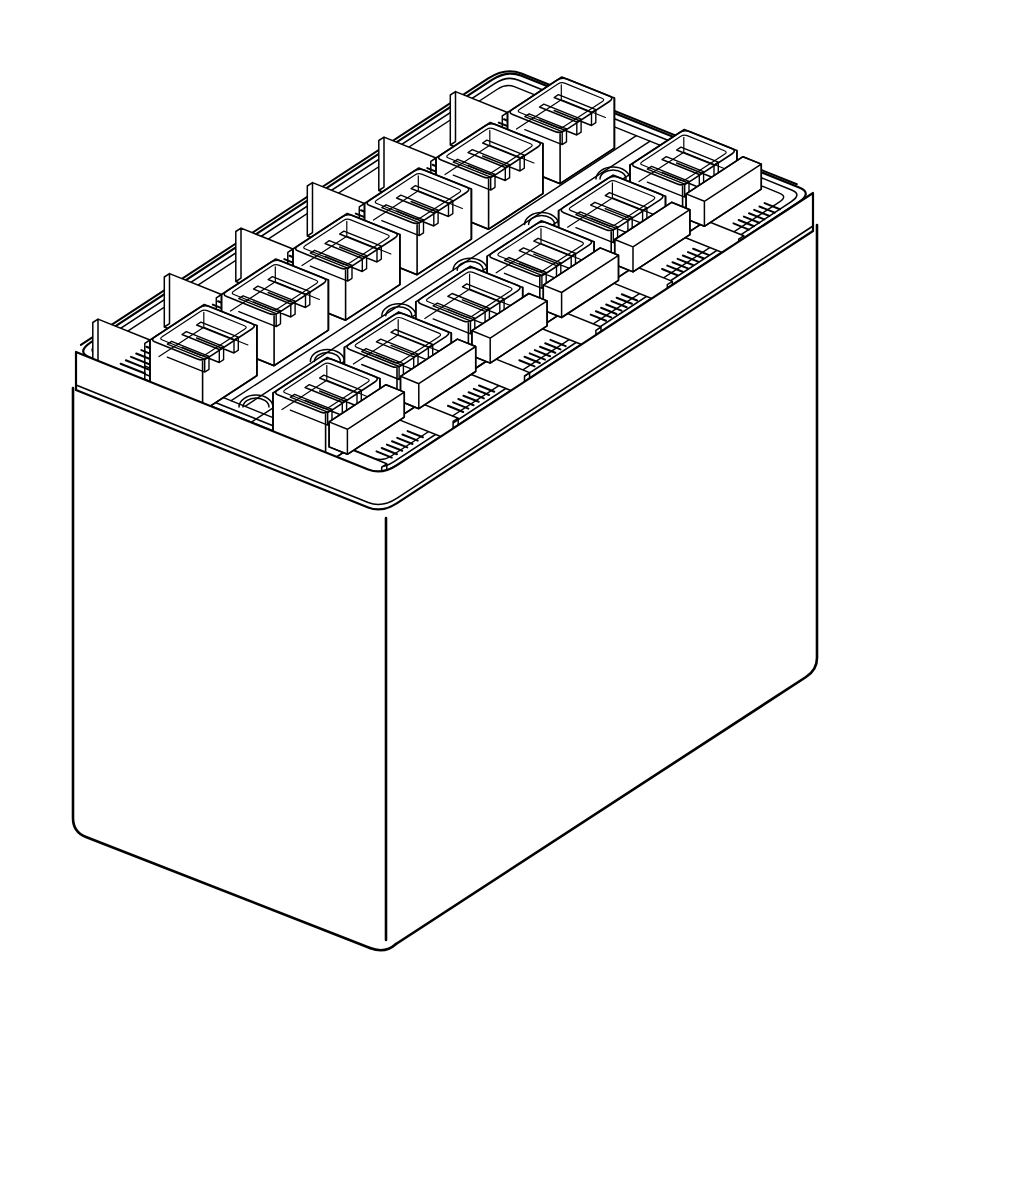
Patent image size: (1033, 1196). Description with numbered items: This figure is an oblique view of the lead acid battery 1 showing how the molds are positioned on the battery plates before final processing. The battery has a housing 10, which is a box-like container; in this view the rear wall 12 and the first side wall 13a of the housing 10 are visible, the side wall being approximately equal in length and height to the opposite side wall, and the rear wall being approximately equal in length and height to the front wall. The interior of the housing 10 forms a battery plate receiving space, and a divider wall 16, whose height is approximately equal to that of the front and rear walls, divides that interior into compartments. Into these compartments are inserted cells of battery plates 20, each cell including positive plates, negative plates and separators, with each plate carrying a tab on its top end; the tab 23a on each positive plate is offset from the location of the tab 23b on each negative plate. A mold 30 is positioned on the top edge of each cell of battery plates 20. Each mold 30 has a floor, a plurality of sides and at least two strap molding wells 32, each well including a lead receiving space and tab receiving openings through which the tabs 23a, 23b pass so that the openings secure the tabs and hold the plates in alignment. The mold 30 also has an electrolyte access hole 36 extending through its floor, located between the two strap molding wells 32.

The lead acid battery 1 is at (207, 107).
The housing 10 is at (177, 887).
The rear wall 12 is at (630, 605).
The first side wall 13a is at (241, 673).
The divider wall 16 is at (570, 333).
The cell of battery plates 20 is at (482, 413).
The tab on positive plate 23a is at (327, 393).
The tab on negative plate 23b is at (195, 350).
The mold 30 is at (337, 430).
The strap molding well 32 is at (647, 230).
The electrolyte access hole 36 is at (413, 306).